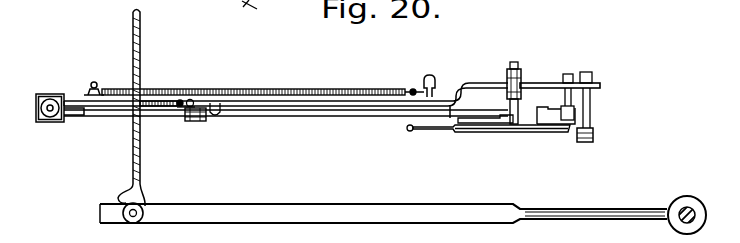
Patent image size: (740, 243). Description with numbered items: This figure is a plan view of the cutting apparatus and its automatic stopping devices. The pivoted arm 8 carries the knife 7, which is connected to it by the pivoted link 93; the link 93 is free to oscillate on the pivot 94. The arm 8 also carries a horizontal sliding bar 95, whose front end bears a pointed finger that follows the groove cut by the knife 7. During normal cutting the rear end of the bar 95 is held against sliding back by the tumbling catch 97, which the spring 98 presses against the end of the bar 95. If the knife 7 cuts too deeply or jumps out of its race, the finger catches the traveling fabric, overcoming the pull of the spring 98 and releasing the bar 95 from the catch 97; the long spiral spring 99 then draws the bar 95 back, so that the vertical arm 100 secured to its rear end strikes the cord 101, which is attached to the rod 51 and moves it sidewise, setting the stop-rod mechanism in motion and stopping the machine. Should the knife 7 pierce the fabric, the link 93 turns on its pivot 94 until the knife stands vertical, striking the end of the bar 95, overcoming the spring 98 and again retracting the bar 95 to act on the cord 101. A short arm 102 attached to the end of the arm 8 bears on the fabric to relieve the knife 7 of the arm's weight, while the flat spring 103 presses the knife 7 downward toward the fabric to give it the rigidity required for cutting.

The knife 7 is at (529, 131).
The arm 8 is at (309, 105).
The rod 51 is at (403, 215).
The pivoted link 93 is at (521, 96).
The pivot 94 is at (515, 68).
The horizontal sliding bar 95 is at (318, 110).
The tumbling catch 97 is at (183, 107).
The spring 98 is at (165, 100).
The long spiral spring 99 is at (251, 84).
The vertical arm 100 is at (199, 114).
The cord 101 is at (132, 156).
The short arm 102 is at (592, 136).
The flat spring 103 is at (550, 110).